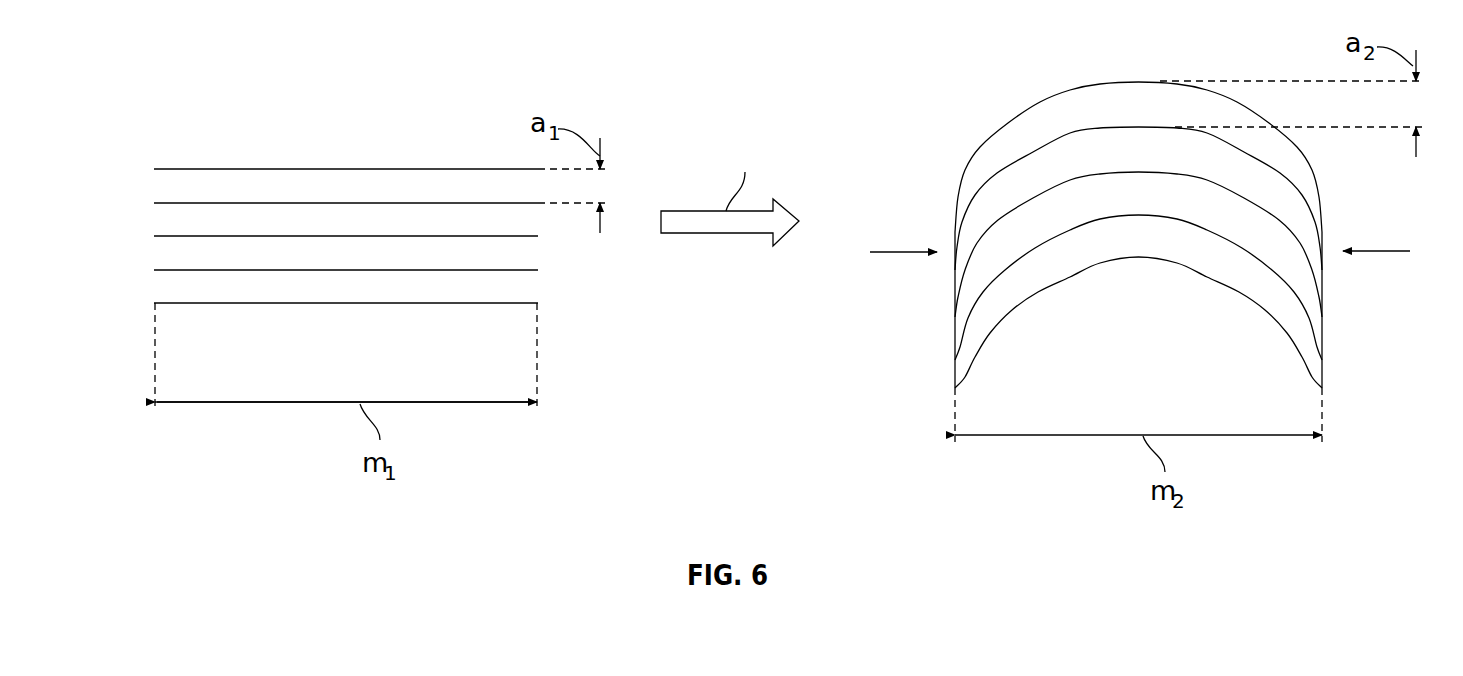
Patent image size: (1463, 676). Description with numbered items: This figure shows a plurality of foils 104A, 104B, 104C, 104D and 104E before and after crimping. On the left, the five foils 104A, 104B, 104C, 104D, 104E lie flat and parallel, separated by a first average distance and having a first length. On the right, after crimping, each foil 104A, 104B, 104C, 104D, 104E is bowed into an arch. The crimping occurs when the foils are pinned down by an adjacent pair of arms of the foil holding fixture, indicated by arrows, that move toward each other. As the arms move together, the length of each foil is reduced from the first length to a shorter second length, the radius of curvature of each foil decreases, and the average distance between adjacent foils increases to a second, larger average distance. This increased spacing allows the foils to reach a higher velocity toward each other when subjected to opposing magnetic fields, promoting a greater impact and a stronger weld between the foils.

The foil 104A is at (197, 167).
The foil 104B is at (197, 201).
The foil 104C is at (197, 234).
The foil 104D is at (197, 268).
The foil 104E is at (197, 301).